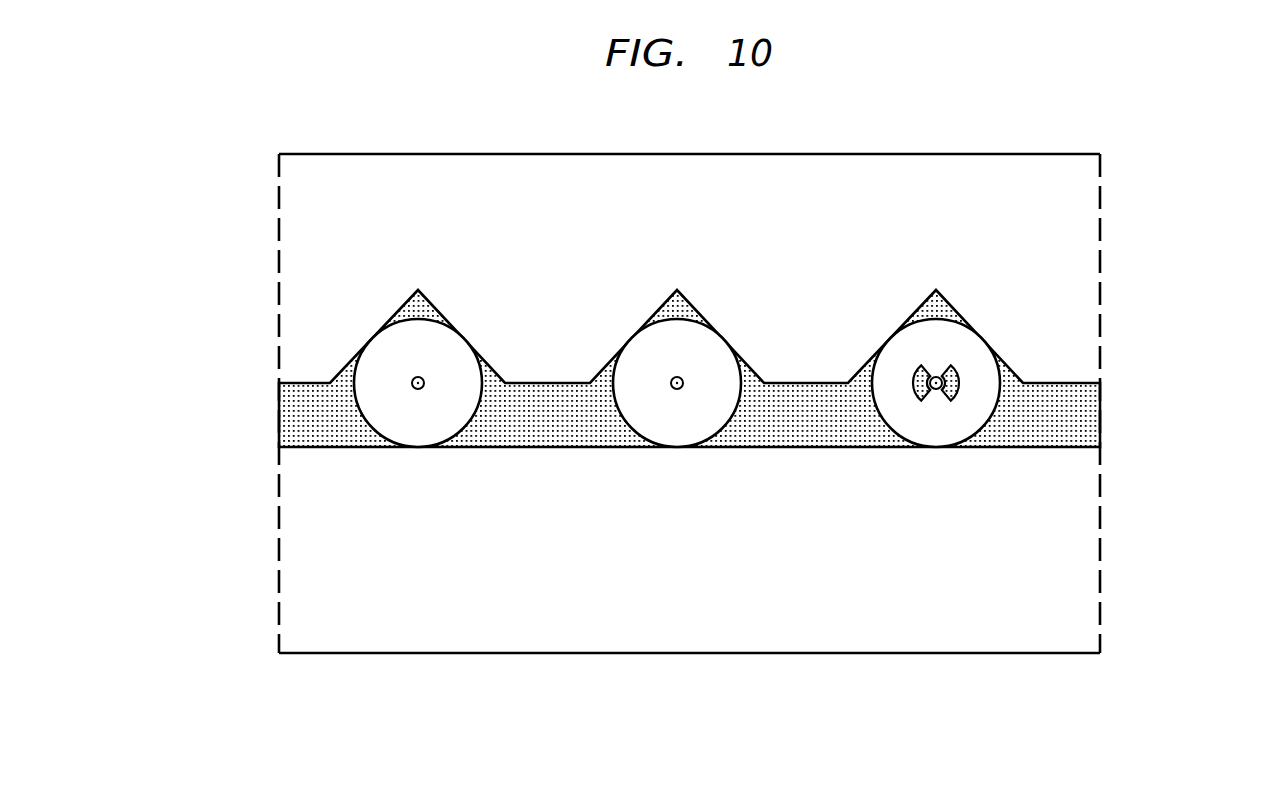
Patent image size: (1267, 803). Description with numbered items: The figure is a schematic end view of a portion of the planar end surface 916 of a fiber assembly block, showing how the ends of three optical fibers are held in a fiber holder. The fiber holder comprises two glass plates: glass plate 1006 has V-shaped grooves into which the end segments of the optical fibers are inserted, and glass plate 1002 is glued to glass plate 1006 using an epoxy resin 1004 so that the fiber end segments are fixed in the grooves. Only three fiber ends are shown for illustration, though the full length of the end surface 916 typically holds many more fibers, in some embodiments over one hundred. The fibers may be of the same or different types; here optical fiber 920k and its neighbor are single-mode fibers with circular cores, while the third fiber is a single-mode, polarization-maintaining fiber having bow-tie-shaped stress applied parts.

The planar end surface 916 is at (172, 166).
The glass plate 1006 is at (932, 167).
The glass plate 1002 is at (570, 640).
The epoxy resin 1004 is at (1122, 416).
The optical fiber 920k is at (443, 342).